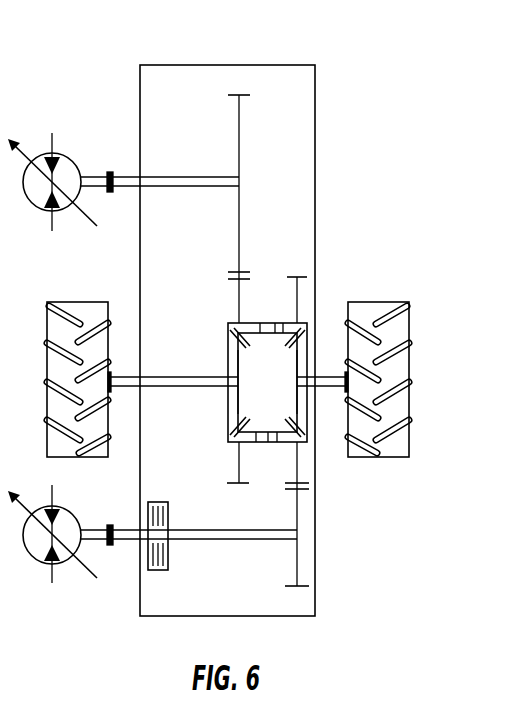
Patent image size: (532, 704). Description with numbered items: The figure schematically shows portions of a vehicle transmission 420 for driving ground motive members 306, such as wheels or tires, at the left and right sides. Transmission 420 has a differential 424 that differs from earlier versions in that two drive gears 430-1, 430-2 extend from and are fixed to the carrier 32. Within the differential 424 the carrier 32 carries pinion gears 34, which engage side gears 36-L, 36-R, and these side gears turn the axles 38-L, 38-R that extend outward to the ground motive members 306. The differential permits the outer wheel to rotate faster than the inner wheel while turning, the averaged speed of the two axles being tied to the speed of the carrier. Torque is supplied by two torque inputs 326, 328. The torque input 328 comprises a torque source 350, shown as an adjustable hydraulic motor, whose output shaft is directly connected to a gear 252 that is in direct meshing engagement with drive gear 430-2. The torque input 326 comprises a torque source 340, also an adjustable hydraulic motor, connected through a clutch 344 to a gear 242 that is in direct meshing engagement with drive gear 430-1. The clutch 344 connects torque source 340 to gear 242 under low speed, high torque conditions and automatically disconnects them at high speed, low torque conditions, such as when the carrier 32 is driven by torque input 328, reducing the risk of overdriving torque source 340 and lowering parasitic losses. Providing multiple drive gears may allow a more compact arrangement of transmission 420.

The vehicle transmission 420 is at (102, 52).
The torque input 328 is at (42, 98).
The torque source 350 is at (30, 201).
The gear 252 is at (240, 137).
The drive gear 430-1 is at (292, 274).
The drive gear 430-2 is at (236, 305).
The differential 424 is at (313, 315).
The carrier 32 is at (256, 322).
The pinion gears 34 is at (282, 323).
The side gear 36-L is at (228, 364).
The side gear 36-R is at (296, 412).
The axle 38-L is at (124, 376).
The axle 38-R is at (332, 387).
The ground motive members 306 is at (47, 367).
The torque input 326 is at (64, 610).
The torque source 340 is at (30, 554).
The clutch 344 is at (162, 502).
The gear 242 is at (297, 553).